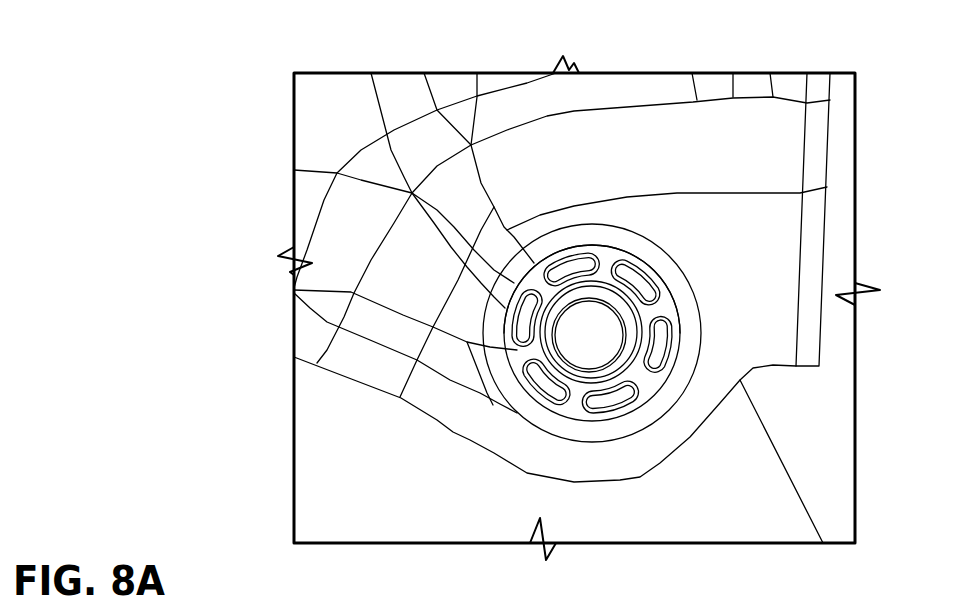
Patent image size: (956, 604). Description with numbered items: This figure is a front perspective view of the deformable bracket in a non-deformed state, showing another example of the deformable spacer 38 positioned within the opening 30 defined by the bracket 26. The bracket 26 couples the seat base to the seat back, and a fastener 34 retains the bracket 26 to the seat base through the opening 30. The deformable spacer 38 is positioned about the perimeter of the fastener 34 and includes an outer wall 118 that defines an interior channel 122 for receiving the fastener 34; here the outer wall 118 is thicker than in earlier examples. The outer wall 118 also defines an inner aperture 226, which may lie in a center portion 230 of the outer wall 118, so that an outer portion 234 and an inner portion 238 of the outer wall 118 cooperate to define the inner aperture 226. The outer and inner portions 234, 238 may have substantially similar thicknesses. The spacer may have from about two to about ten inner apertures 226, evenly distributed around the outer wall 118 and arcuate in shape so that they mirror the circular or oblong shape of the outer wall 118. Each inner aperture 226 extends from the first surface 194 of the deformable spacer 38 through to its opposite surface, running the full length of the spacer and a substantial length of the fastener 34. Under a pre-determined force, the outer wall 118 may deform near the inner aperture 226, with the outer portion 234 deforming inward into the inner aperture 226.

The bracket 26 is at (844, 232).
The opening 30 is at (699, 338).
The fastener 34 is at (632, 440).
The deformable spacer 38 is at (760, 265).
The outer wall 118 is at (372, 348).
The interior channel 122 is at (732, 263).
The first surface 194 is at (365, 226).
The inner aperture 226 is at (470, 472).
The center portion 230 is at (546, 483).
The outer portion 234 is at (592, 180).
The inner portion 238 is at (616, 159).